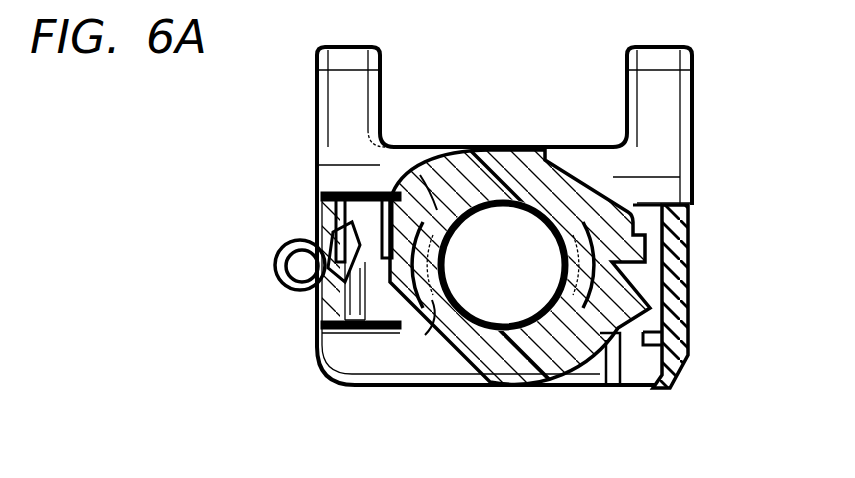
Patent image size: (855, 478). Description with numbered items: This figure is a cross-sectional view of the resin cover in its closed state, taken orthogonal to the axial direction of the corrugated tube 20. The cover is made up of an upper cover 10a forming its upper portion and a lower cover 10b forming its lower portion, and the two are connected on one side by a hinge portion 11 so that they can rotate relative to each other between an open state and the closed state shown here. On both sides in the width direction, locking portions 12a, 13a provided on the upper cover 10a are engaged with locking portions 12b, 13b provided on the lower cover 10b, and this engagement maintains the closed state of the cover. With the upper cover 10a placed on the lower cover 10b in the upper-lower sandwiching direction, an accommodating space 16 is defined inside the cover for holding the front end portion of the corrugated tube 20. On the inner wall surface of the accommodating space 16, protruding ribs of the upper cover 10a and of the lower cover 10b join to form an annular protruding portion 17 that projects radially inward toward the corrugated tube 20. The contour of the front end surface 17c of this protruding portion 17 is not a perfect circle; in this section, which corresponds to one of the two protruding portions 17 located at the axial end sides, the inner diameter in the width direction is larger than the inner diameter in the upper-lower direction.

The upper cover 10a is at (692, 88).
The lower cover 10b is at (588, 388).
The hinge portion 11 is at (283, 280).
The locking portion 12a is at (668, 362).
The locking portion 12b is at (693, 290).
The locking portion 13a is at (322, 235).
The locking portion 13b is at (352, 205).
The accommodating space 16 is at (520, 250).
The annular protruding portion 17 is at (493, 150).
The front end surface 17c is at (418, 176).
The corrugated tube 20 is at (448, 265).